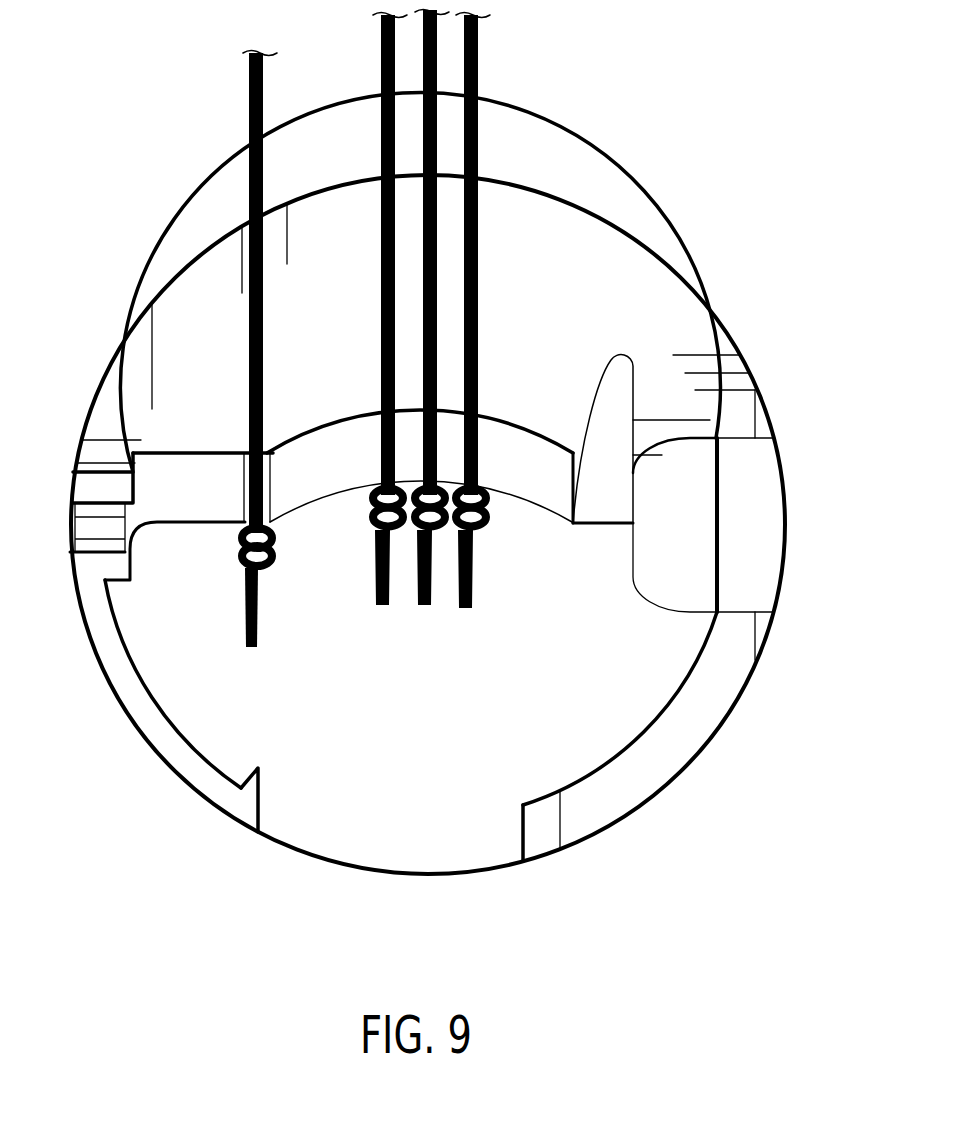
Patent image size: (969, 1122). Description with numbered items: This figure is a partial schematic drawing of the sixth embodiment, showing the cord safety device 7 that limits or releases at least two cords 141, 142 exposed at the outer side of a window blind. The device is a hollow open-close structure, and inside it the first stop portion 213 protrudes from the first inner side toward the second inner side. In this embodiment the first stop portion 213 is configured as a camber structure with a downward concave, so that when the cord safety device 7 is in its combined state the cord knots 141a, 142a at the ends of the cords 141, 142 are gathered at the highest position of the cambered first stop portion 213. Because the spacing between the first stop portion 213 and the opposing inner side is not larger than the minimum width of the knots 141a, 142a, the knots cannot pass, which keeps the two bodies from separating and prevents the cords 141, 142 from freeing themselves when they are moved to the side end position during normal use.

The cord safety device 7 is at (50, 232).
The cord 141 is at (478, 36).
The knot 141a is at (485, 537).
The cord 142 is at (263, 76).
The knot 142a is at (273, 562).
The first stop portion 213 is at (525, 473).